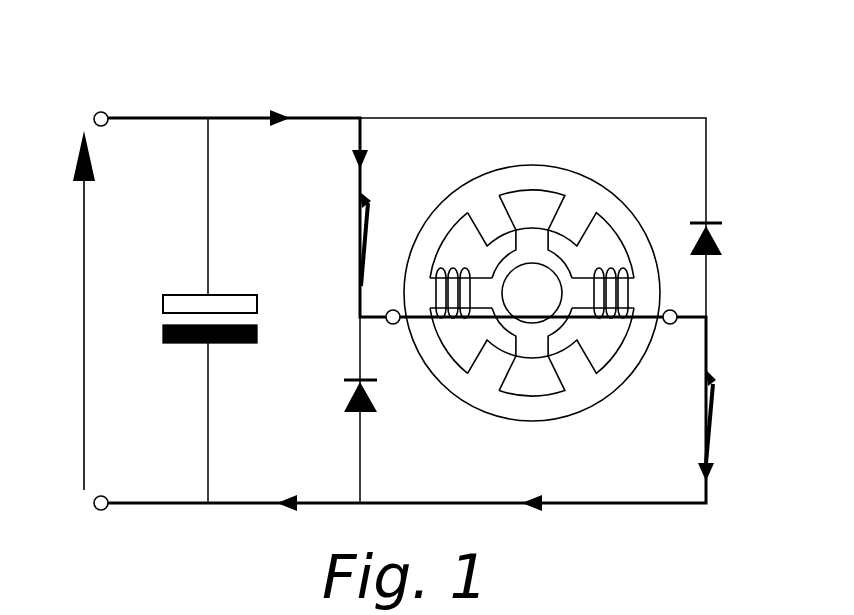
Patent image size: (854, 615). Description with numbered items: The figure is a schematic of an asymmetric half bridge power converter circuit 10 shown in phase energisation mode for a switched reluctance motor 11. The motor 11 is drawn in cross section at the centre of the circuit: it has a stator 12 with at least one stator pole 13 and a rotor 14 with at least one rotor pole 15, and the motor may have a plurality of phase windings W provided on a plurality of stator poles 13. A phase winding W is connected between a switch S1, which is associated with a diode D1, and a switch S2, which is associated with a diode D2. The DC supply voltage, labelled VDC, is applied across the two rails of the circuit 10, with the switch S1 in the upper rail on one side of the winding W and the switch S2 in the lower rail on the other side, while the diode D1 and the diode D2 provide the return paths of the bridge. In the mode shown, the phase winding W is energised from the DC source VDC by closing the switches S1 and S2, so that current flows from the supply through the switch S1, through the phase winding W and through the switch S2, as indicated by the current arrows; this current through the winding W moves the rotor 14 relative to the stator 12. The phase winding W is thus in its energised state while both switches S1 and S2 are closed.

The asymmetric half bridge power converter circuit 10 is at (579, 248).
The switched reluctance motor 11 is at (635, 196).
The stator 12 is at (540, 182).
The stator pole 13 is at (488, 222).
The rotor 14 is at (532, 343).
The rotor pole 15 is at (530, 238).
The phase winding W is at (640, 290).
The switch S1 is at (359, 222).
The switch S2 is at (714, 415).
The diode D1 is at (347, 397).
The diode D2 is at (717, 235).
The DC voltage source VDC is at (56, 310).